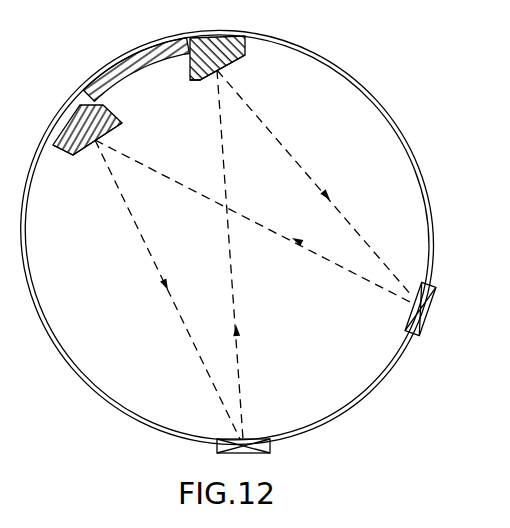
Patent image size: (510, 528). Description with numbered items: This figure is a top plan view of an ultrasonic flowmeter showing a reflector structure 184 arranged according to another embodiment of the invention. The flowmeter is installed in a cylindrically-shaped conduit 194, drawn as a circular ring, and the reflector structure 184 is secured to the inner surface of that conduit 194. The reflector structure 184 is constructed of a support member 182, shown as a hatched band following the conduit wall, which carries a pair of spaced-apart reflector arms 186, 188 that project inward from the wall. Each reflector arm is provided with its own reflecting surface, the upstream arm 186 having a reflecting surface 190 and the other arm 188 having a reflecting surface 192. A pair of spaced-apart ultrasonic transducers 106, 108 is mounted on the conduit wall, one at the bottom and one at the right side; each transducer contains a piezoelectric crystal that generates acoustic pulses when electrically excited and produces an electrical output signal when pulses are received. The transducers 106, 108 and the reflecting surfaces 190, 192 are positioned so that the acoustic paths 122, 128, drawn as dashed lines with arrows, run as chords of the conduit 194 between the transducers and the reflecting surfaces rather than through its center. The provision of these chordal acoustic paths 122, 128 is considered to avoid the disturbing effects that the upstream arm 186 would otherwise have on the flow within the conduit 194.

The ultrasonic transducer 106 is at (216, 449).
The ultrasonic transducer 108 is at (432, 308).
The acoustic path 122 is at (313, 254).
The acoustic path 128 is at (146, 250).
The support member 182 is at (117, 62).
The reflector structure 184 is at (152, 38).
The reflector arm 186 is at (56, 152).
The reflector arm 188 is at (246, 48).
The reflecting surface 190 is at (77, 158).
The reflecting surface 192 is at (199, 79).
The conduit 194 is at (79, 377).